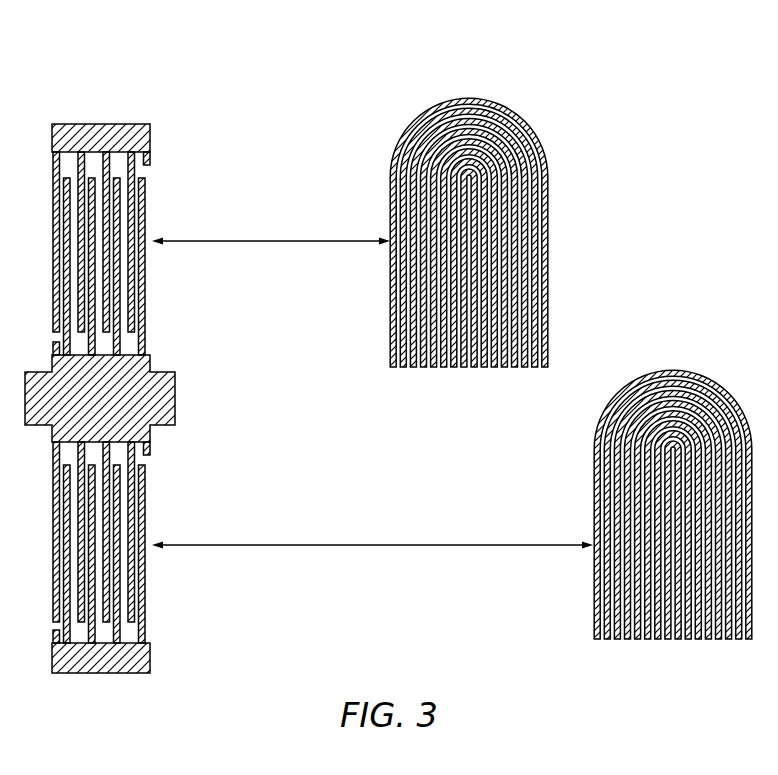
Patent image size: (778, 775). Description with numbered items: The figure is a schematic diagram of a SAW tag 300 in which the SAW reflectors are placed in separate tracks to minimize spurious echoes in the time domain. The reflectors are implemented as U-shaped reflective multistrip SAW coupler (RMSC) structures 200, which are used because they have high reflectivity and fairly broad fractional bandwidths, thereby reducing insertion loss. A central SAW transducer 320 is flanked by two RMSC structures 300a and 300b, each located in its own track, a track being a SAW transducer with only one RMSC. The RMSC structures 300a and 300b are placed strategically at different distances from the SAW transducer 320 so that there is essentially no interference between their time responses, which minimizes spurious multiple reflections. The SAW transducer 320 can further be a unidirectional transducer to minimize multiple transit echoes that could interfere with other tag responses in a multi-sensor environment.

The SAW tag 300 is at (630, 68).
The RMSC structure 300a is at (540, 121).
The RMSC structure 300b is at (592, 426).
The SAW transducer 320 is at (158, 214).
The U-shaped reflective multistrip SAW coupler 200 is at (562, 253).